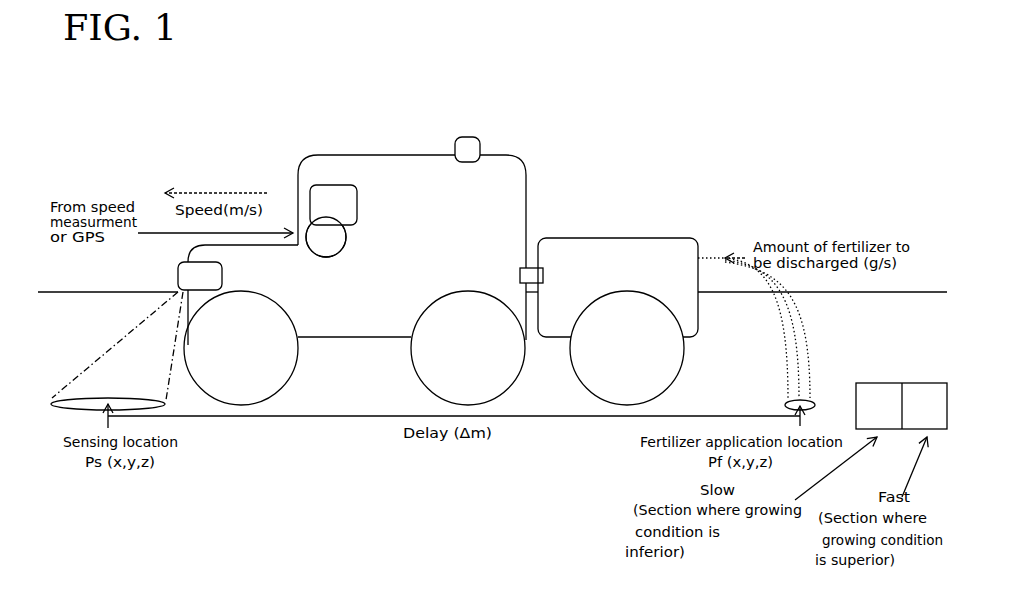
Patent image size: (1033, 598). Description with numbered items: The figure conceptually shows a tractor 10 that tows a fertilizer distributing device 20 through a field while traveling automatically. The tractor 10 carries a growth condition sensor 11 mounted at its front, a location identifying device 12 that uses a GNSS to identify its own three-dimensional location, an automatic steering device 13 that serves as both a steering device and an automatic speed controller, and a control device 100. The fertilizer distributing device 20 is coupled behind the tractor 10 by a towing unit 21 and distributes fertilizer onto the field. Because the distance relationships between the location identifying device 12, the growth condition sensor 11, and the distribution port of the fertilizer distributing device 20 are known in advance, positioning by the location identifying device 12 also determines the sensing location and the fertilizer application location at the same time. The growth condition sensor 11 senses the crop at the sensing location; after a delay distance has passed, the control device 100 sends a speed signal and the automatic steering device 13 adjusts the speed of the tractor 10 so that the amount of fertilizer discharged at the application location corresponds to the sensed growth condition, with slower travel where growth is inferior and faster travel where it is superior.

The tractor 10 is at (518, 202).
The growth condition sensor 11 is at (197, 275).
The location identifying device 12 is at (517, 117).
The automatic steering device 13 is at (313, 236).
The fertilizer distributing device 20 is at (675, 247).
The towing unit 21 is at (532, 277).
The control device 100 is at (328, 197).